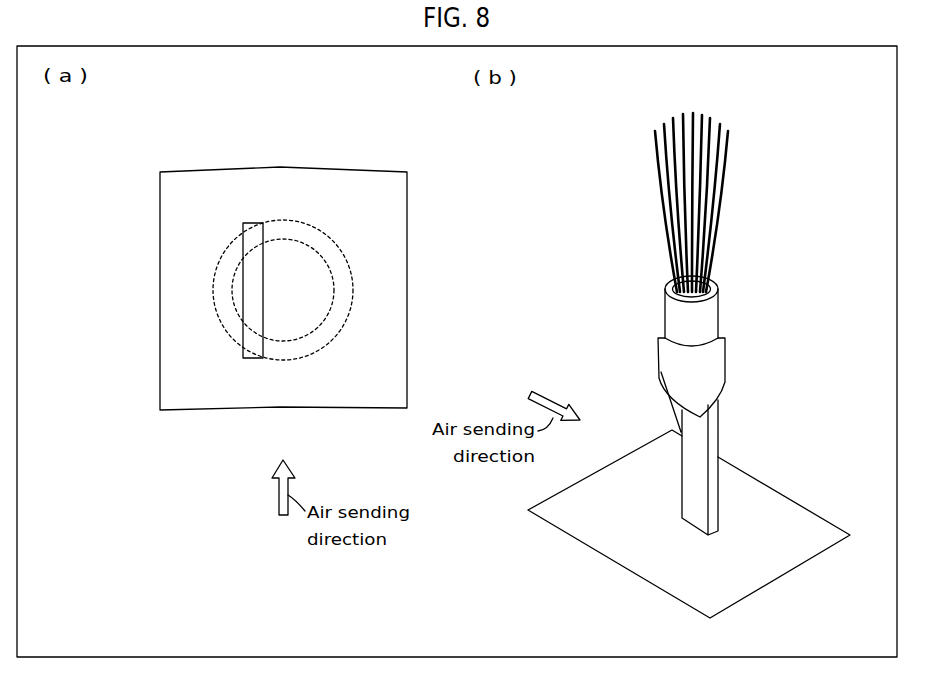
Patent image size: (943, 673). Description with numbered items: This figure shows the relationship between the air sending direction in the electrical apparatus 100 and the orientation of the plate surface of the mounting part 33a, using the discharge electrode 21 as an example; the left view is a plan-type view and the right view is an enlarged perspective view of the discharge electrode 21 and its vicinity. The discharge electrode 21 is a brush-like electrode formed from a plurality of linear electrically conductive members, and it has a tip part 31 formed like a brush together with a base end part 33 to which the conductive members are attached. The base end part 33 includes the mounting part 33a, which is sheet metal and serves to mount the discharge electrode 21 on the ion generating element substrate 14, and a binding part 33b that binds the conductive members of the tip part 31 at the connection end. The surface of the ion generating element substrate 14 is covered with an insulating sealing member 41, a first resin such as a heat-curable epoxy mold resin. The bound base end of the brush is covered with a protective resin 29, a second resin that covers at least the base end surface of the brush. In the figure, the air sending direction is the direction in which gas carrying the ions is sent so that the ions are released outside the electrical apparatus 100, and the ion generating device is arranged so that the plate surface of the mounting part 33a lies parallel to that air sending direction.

The electrical apparatus 100 is at (379, 121).
The ion generating element substrate 14 is at (408, 268).
The insulating sealing member 41 is at (515, 392).
The discharge electrode 21 is at (536, 245).
The tip part 31 is at (660, 245).
The protective resin 29 is at (668, 346).
The base end part 33 is at (648, 371).
The mounting part 33a is at (245, 228).
The binding part 33b is at (663, 325).